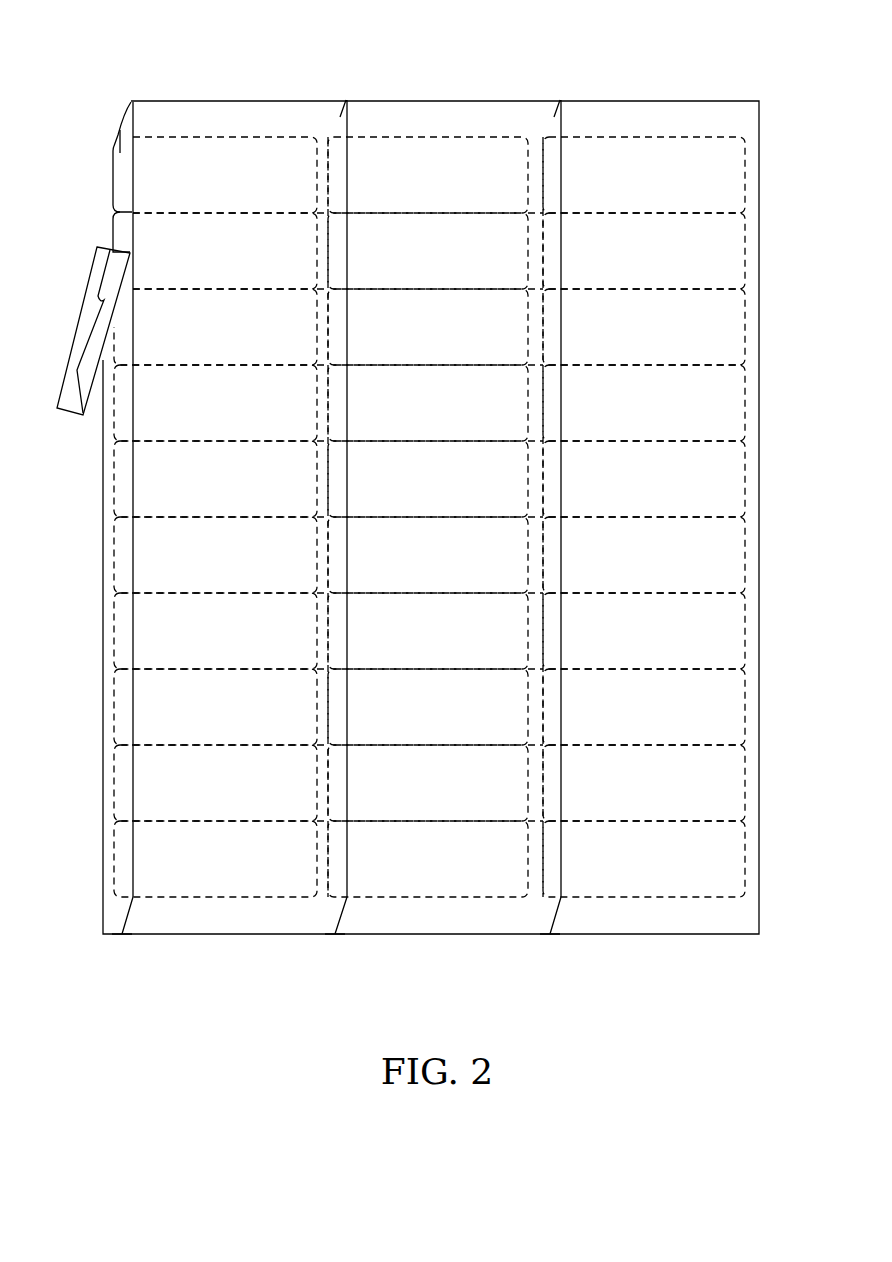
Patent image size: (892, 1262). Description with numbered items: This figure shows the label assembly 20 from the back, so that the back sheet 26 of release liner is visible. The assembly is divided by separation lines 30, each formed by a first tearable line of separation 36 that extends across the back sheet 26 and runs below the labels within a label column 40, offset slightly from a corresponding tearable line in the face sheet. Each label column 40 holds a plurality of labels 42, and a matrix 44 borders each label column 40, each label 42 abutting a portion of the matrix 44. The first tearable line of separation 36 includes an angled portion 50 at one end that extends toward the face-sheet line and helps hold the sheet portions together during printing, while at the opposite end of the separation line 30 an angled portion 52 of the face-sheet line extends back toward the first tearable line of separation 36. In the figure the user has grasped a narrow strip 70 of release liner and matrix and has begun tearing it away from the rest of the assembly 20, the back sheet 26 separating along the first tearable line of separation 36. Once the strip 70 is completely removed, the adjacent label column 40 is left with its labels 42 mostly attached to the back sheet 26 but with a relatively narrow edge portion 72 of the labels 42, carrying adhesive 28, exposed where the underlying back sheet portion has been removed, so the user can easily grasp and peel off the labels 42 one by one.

The label assembly 20 is at (402, 550).
The back sheet 26 is at (670, 116).
The adhesive 28 is at (120, 167).
The separation line 30 is at (122, 951).
The first tearable line of separation 36 is at (133, 568).
The label column 40 is at (221, 136).
The label 42 is at (117, 232).
The matrix 44 is at (118, 128).
The angled portion 50 is at (128, 908).
The angled portion 52 is at (329, 127).
The strip 70 is at (76, 418).
The edge portion 72 is at (120, 152).